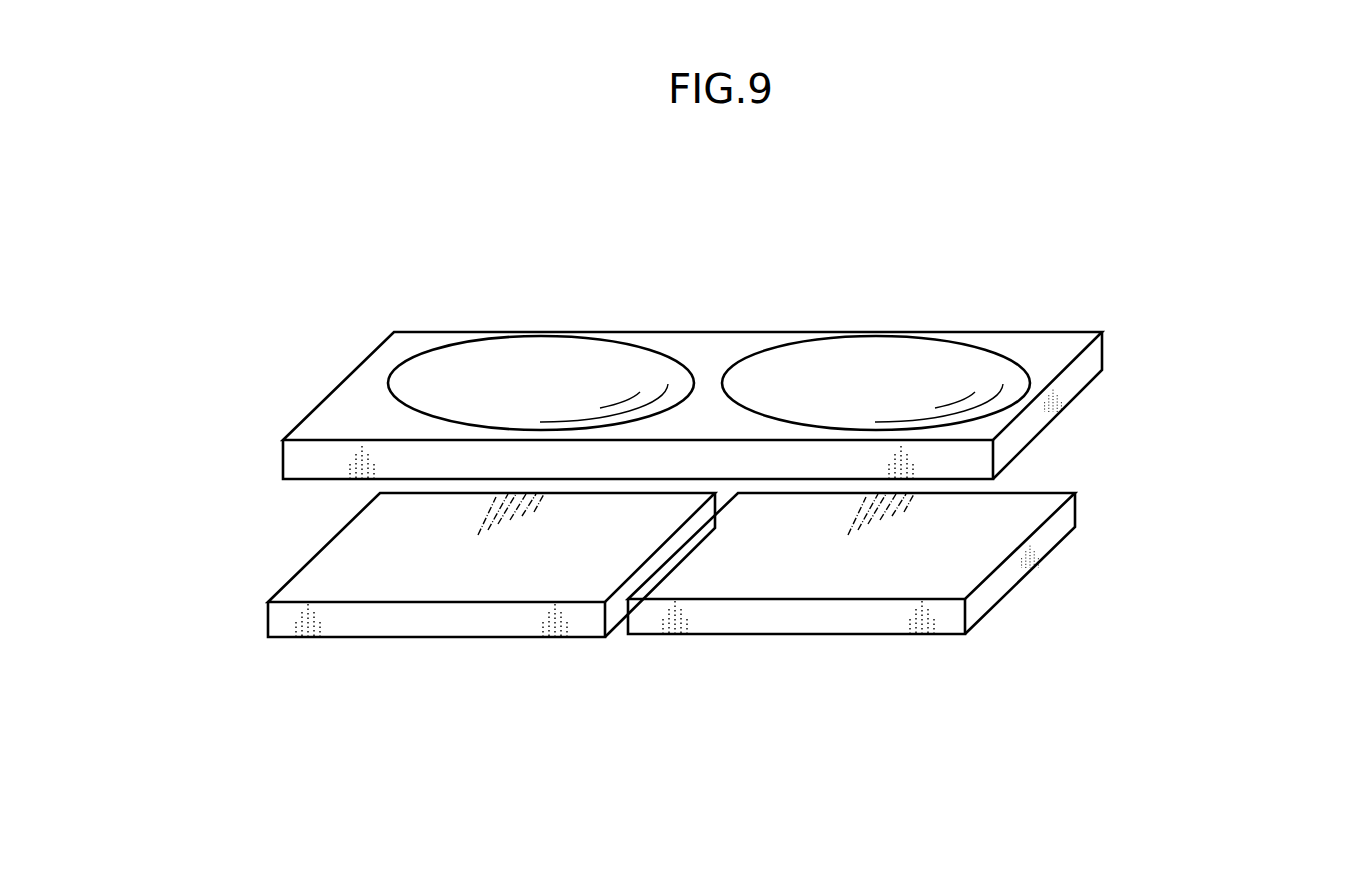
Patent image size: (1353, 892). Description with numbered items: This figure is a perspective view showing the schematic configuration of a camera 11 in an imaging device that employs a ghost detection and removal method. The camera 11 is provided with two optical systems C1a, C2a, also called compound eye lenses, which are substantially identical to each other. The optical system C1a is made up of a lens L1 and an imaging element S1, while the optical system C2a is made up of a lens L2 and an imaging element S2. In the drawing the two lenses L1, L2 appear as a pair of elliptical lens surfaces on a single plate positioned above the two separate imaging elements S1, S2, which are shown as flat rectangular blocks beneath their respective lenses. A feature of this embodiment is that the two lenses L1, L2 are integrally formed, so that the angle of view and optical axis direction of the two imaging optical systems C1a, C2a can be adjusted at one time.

The camera 11 is at (1095, 302).
The lens L1 is at (398, 387).
The lens L2 is at (1018, 386).
The imaging element S1 is at (412, 527).
The imaging element S2 is at (1003, 527).
The optical system C1a is at (408, 486).
The optical system C2a is at (964, 485).